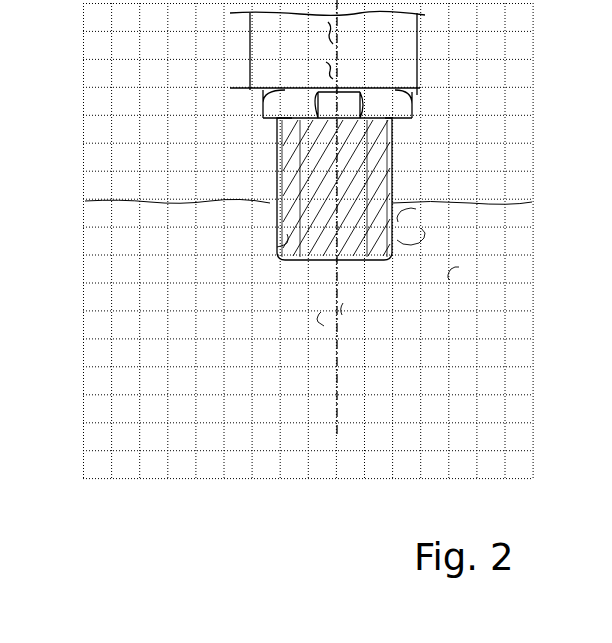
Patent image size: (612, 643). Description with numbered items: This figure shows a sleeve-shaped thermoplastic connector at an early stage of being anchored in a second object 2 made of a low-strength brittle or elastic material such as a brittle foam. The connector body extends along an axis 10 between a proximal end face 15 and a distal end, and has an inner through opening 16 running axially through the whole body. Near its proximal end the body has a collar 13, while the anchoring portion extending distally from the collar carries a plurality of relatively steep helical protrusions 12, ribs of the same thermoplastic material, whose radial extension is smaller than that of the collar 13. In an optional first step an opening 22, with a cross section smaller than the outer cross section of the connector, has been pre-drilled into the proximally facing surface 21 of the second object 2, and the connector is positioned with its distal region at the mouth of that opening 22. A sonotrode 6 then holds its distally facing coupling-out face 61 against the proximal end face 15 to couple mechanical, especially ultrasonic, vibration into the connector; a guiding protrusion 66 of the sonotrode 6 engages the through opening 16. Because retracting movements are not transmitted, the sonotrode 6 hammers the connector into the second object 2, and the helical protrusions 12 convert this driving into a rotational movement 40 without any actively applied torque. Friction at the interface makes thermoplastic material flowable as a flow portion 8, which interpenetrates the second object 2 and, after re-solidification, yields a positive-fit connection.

The second object 2 is at (447, 247).
The sonotrode 6 is at (393, 47).
The flow portion 8 is at (276, 230).
The axis 10 is at (333, 423).
The helical protrusions 12 is at (275, 184).
The collar 13 is at (388, 110).
The proximal end face 15 is at (385, 88).
The through opening 16 is at (335, 170).
The proximally facing surface 21 is at (175, 207).
The opening 22 is at (325, 330).
The rotational movement 40 is at (343, 303).
The coupling-out face 61 is at (263, 108).
The guiding protrusion 66 is at (340, 95).